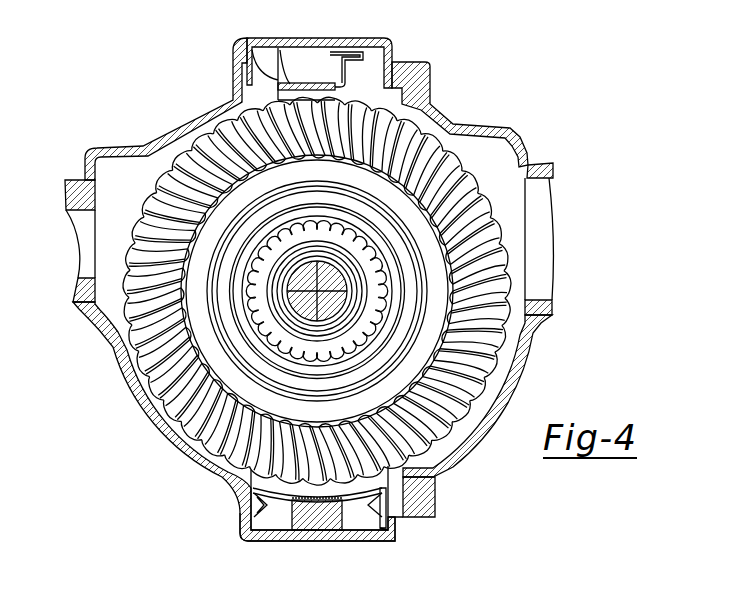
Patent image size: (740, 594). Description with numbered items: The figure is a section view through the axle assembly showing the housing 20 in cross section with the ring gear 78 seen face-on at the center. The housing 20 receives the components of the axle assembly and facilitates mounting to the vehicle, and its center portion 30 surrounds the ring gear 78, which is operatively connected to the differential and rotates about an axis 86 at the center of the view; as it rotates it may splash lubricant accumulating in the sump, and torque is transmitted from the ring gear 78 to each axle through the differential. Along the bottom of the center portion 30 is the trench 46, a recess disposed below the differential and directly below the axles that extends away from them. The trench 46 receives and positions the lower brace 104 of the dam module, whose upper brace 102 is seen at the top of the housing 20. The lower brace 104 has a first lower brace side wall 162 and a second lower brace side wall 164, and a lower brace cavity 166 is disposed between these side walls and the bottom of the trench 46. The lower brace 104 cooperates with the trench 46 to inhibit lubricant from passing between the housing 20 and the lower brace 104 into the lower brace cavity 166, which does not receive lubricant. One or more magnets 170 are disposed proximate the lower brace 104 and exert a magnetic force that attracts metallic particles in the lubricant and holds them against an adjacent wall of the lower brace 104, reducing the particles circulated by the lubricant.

The housing 20 is at (97, 150).
The center portion 30 is at (122, 382).
The trench 46 is at (358, 530).
The ring gear 78 is at (220, 117).
The axis 86 is at (318, 291).
The upper brace 102 is at (248, 45).
The lower brace 104 is at (235, 478).
The first lower brace side wall 162 is at (257, 517).
The second lower brace side wall 164 is at (386, 497).
The lower brace cavity 166 is at (385, 530).
The magnets 170 is at (288, 508).